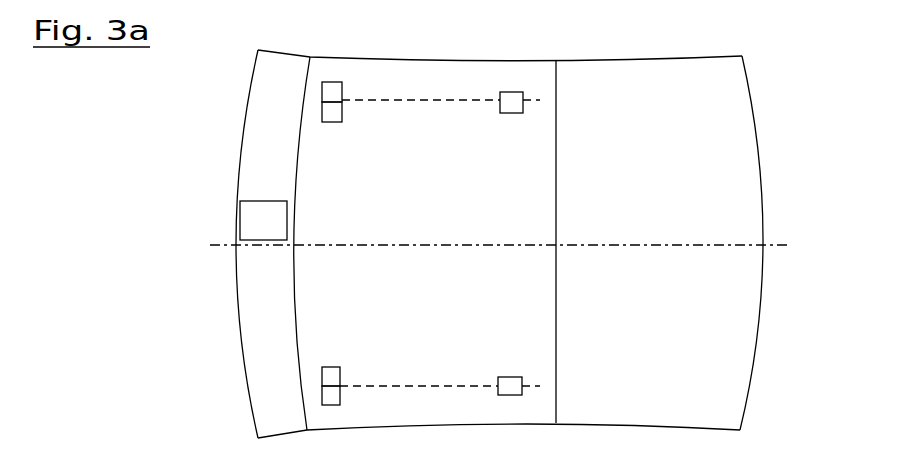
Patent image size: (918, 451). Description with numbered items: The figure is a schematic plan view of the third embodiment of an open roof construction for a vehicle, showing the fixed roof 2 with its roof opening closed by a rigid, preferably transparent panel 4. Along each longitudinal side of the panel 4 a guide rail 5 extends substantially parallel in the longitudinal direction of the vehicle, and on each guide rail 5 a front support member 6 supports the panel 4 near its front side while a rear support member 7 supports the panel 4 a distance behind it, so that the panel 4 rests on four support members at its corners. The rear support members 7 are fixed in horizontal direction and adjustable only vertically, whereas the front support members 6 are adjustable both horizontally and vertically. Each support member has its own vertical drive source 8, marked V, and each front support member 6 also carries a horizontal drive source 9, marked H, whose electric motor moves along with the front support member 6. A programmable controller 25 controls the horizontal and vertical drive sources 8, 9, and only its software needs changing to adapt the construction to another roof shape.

The fixed roof 2 is at (255, 145).
The panel 4 is at (437, 233).
The guide rail 5 is at (443, 100).
The front support member 6 is at (345, 108).
The rear support member 7 is at (512, 92).
The vertical drive source 8 is at (322, 100).
The horizontal drive source 9 is at (338, 82).
The programmable controller 25 is at (263, 220).